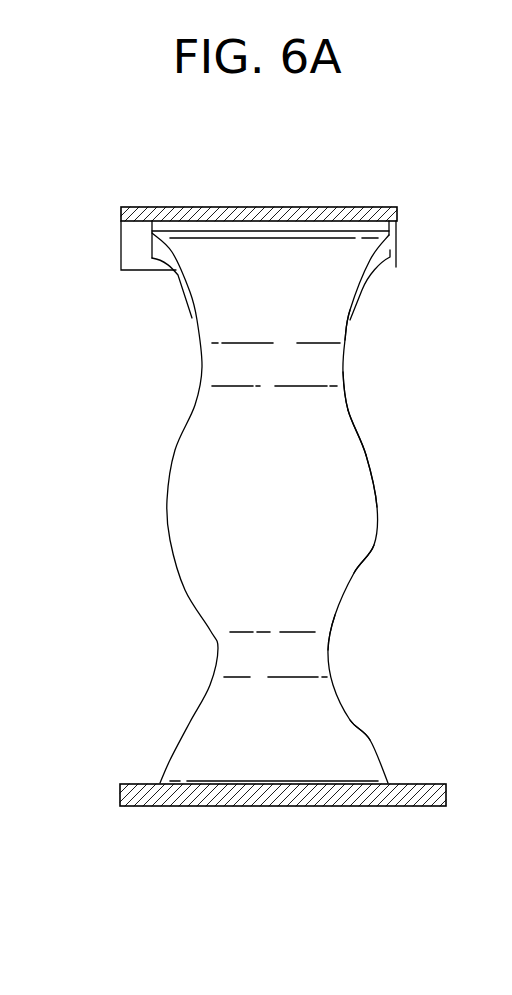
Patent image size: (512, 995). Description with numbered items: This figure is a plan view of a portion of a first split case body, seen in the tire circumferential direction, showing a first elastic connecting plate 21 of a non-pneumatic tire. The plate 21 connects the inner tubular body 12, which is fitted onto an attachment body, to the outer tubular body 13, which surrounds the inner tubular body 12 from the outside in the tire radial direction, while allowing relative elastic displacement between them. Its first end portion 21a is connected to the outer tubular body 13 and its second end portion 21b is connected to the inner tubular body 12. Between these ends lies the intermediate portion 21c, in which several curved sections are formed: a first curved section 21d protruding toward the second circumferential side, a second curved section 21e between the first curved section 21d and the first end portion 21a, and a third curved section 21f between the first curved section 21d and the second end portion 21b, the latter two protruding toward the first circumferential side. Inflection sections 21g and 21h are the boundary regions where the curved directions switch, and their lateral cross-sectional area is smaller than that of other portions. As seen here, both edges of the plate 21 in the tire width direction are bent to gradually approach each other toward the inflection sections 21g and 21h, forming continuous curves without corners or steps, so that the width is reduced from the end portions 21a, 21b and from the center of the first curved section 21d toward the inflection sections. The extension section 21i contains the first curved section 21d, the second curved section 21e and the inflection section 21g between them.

The inner tubular body 12 is at (266, 207).
The outer tubular body 13 is at (403, 806).
The first elastic connecting plate 21 is at (168, 437).
The first end portion 21a is at (257, 784).
The second end portion 21b is at (309, 231).
The intermediate portion 21c is at (367, 457).
The first curved section 21d is at (373, 507).
The second curved section 21e is at (370, 737).
The third curved section 21f is at (340, 312).
The inflection section 21g is at (330, 652).
The inflection section 21h is at (344, 378).
The extension section 21i is at (352, 573).